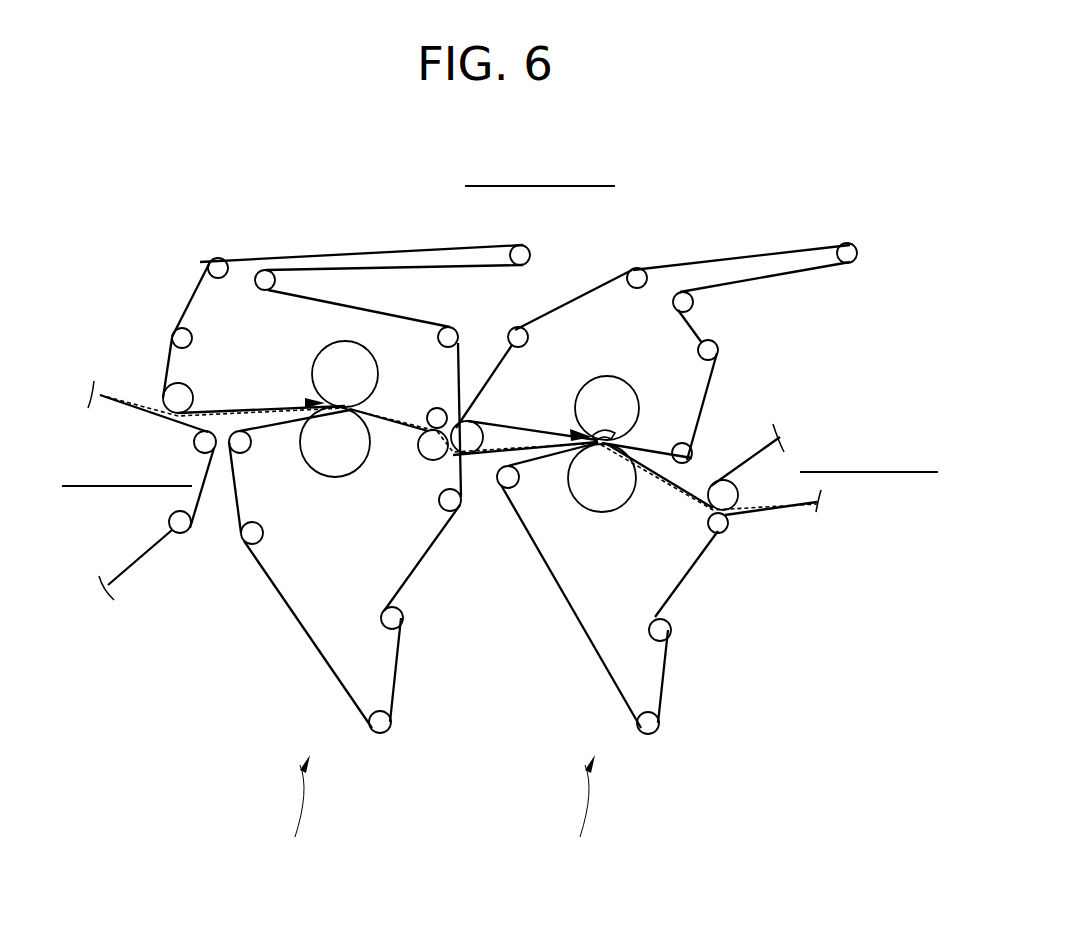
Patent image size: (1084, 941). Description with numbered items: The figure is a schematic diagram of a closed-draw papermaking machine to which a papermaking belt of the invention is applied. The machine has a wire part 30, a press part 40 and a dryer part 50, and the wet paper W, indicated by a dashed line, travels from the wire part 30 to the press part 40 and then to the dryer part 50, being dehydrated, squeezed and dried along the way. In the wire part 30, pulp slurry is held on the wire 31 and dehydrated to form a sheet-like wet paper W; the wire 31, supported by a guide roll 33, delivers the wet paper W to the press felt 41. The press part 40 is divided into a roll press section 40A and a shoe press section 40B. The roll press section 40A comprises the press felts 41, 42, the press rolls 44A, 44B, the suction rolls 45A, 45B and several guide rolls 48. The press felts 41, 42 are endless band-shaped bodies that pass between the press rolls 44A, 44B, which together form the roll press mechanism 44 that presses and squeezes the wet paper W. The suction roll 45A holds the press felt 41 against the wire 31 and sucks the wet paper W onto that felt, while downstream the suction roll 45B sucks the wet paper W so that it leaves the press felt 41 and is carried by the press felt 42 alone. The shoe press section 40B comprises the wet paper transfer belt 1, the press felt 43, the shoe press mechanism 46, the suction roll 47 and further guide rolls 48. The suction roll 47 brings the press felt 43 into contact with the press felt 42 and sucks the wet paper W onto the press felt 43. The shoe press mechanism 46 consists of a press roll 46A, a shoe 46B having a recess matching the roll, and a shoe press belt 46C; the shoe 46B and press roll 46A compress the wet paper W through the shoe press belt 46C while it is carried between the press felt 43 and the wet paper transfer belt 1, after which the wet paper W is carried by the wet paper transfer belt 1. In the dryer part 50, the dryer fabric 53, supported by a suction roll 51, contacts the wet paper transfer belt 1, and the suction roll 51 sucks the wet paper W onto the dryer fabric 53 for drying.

The wet paper transfer belt 1 is at (565, 600).
The wire part 30 is at (143, 490).
The wire 31 is at (150, 549).
The guide roll 33 is at (207, 453).
The press part 40 is at (510, 515).
The roll press section 40A is at (290, 811).
The shoe press section 40B is at (574, 811).
The press felt 41 is at (358, 252).
The press felt 42 is at (288, 603).
The press felt 43 is at (715, 261).
The roll press mechanism 44 is at (318, 420).
The press roll 44A is at (330, 368).
The press roll 44B is at (340, 477).
The suction roll 45A is at (193, 398).
The suction roll 45B is at (424, 456).
The shoe press mechanism 46 is at (602, 435).
The press roll 46A is at (600, 495).
The shoe 46B is at (617, 434).
The shoe press belt 46C is at (609, 375).
The suction roll 47 is at (463, 452).
The guide roll 48 is at (188, 333).
The dryer part 50 is at (823, 450).
The suction roll 51 is at (740, 495).
The dryer fabric 53 is at (748, 459).
The wet paper W is at (122, 392).